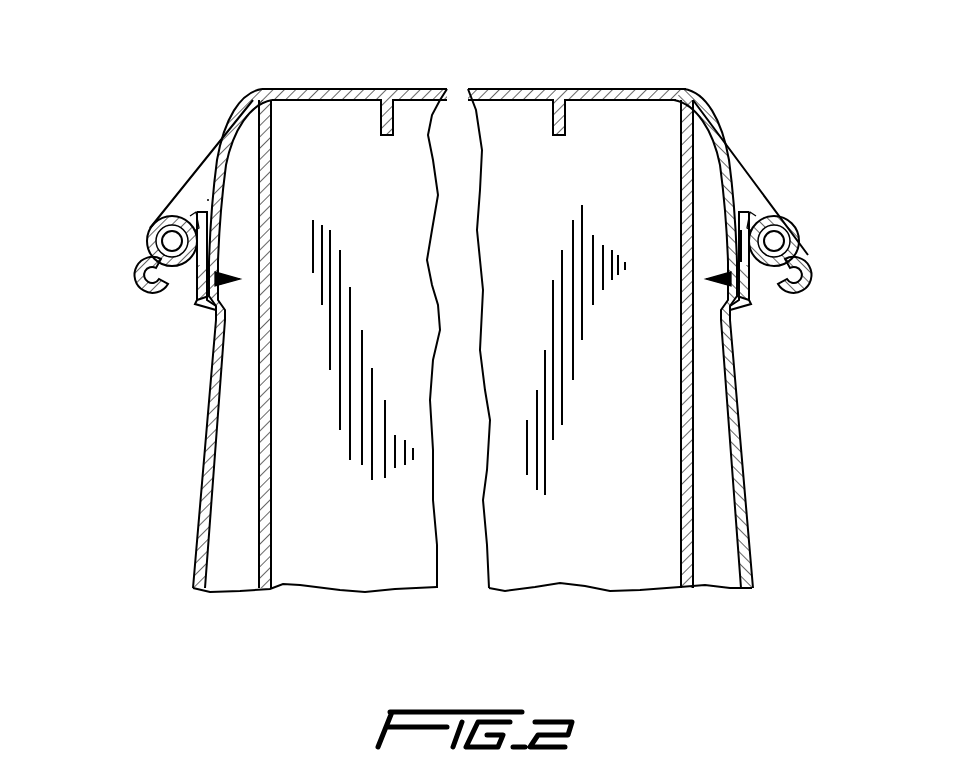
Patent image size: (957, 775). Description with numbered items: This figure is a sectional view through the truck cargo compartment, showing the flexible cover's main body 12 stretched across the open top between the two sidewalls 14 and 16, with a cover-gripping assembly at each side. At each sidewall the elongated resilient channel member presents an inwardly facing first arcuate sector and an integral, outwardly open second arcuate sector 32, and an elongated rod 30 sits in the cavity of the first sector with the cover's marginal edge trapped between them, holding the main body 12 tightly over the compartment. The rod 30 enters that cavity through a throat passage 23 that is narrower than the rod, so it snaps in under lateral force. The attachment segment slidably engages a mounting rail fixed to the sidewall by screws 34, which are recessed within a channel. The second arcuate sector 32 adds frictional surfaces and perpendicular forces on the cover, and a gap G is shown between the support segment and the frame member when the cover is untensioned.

The main body 12 is at (421, 88).
The sidewall 14 is at (205, 458).
The sidewall 16 is at (748, 440).
The throat passage 23 is at (150, 260).
The rod 30 is at (740, 247).
The second arcuate sector 32 is at (813, 288).
The screws 34 is at (714, 286).
The gap G is at (197, 202).